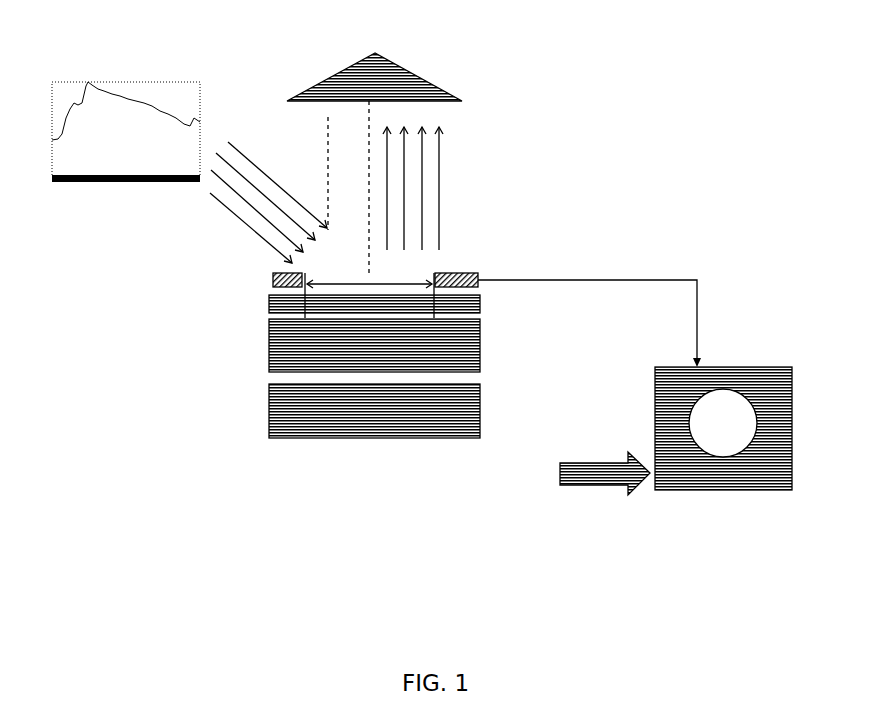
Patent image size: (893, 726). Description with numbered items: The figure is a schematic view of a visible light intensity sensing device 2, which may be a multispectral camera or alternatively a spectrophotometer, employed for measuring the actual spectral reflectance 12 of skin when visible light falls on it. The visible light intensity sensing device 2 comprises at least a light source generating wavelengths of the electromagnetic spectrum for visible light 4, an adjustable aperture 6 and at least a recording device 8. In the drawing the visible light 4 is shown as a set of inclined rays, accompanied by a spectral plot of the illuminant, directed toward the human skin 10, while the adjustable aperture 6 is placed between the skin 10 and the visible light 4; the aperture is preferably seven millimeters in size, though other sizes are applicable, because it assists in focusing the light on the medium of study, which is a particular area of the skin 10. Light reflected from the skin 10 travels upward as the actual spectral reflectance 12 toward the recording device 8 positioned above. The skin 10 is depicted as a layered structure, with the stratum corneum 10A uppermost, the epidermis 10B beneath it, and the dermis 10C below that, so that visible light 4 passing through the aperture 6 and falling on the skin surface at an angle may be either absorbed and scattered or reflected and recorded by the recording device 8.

The visible light intensity sensing device 2 is at (601, 46).
The visible light 4 is at (242, 223).
The adjustable aperture 6 is at (463, 273).
The recording device 8 is at (455, 93).
The skin 10 is at (563, 298).
The stratum corneum 10A is at (391, 308).
The epidermis 10B is at (391, 345).
The dermis 10C is at (391, 411).
The actual spectral reflectance 12 is at (445, 207).